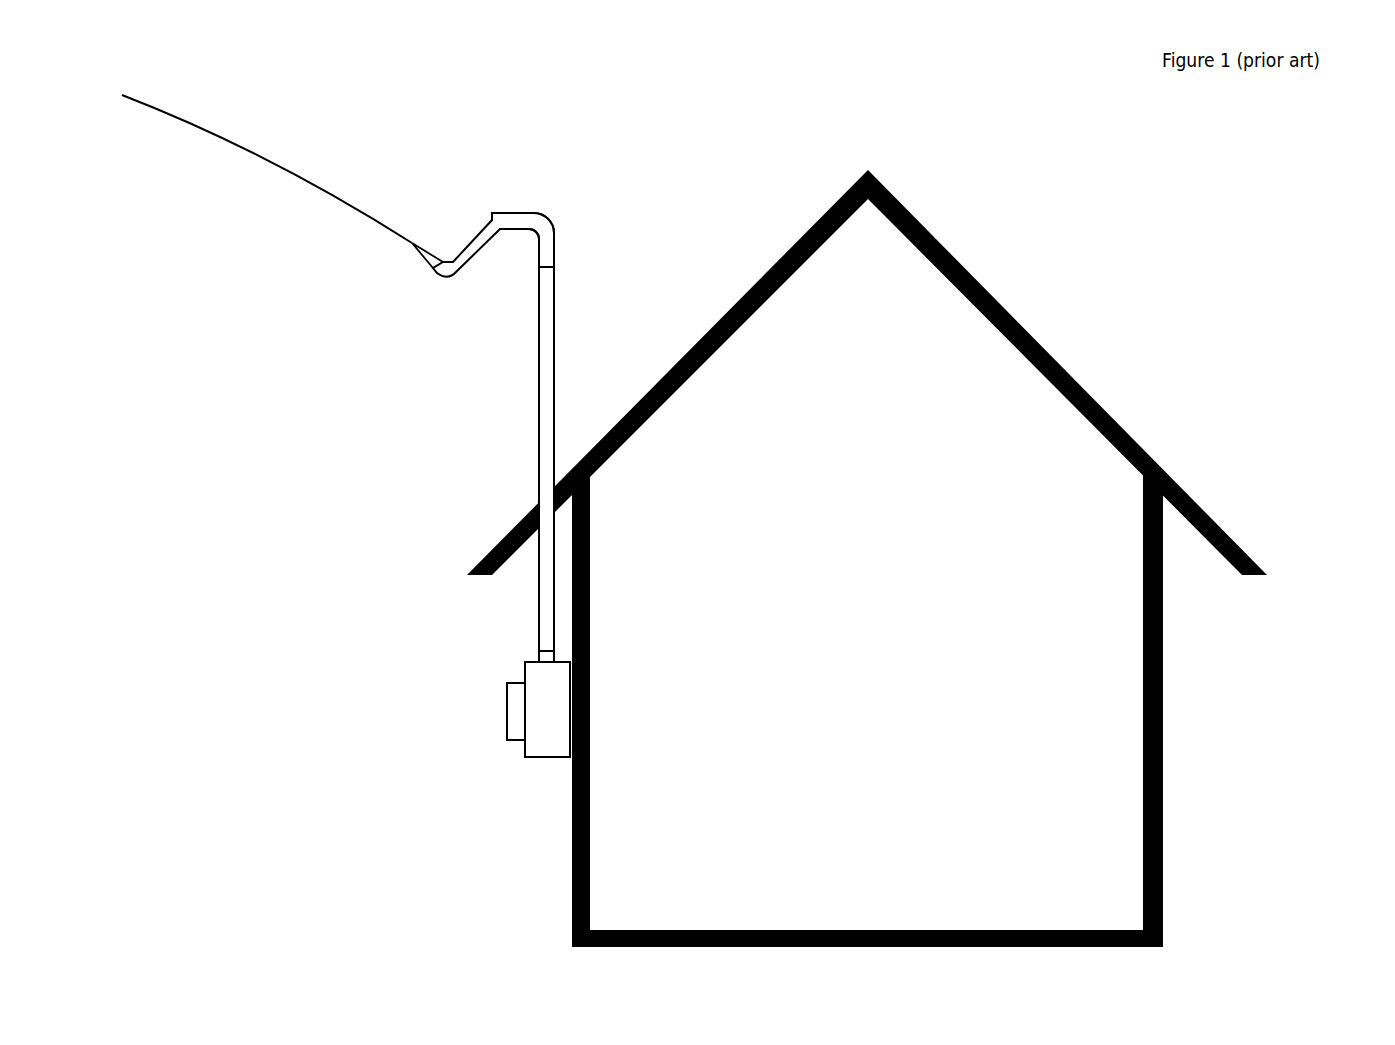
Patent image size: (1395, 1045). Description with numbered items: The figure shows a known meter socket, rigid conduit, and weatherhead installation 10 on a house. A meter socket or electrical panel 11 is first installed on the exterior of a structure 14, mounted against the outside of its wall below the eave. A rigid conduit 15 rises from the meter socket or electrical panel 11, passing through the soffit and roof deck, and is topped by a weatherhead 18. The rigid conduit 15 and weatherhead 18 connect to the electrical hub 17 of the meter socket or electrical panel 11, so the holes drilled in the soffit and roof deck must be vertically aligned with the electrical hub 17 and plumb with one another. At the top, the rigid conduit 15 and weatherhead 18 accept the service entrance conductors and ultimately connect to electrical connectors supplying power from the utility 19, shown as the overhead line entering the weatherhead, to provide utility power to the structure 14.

The meter socket, rigid conduit, and weatherhead installation 10 is at (1129, 103).
The meter socket or electrical panel 11 is at (493, 773).
The structure 14 is at (924, 558).
The rigid conduit 15 is at (509, 315).
The electrical hub 17 is at (511, 638).
The weatherhead 18 is at (572, 232).
The utility 19 is at (235, 104).